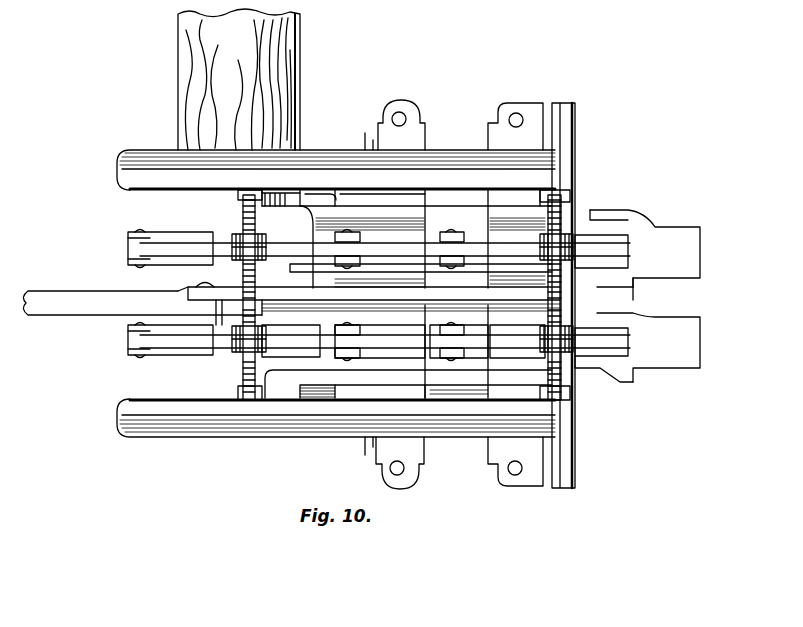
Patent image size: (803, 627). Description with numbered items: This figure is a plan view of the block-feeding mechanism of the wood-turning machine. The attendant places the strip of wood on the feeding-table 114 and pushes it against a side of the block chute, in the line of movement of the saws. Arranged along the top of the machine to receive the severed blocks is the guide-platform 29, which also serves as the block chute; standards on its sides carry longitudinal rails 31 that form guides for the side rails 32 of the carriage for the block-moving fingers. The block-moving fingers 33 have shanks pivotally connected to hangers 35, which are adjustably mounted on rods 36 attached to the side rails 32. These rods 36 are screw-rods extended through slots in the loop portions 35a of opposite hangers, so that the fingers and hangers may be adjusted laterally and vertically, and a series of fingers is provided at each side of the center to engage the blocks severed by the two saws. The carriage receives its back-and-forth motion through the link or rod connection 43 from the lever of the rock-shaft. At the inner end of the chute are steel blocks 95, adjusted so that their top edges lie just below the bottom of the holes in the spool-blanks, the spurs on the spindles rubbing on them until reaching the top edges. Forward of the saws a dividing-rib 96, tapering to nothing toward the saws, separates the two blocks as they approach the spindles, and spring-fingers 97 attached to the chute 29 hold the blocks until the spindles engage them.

The feeding-table 114 is at (239, 79).
The longitudinal rails 31 is at (442, 182).
The side rails 32 is at (560, 192).
The guide-platform 29 is at (318, 452).
The block-moving fingers 33 is at (176, 240).
The hangers 35 is at (258, 242).
The loop portions 35a is at (566, 345).
The rods 36 is at (243, 270).
The link or rod connection 43 is at (62, 315).
The steel blocks 95 is at (645, 296).
The dividing-rib 96 is at (410, 292).
The spring-fingers 97 is at (640, 220).